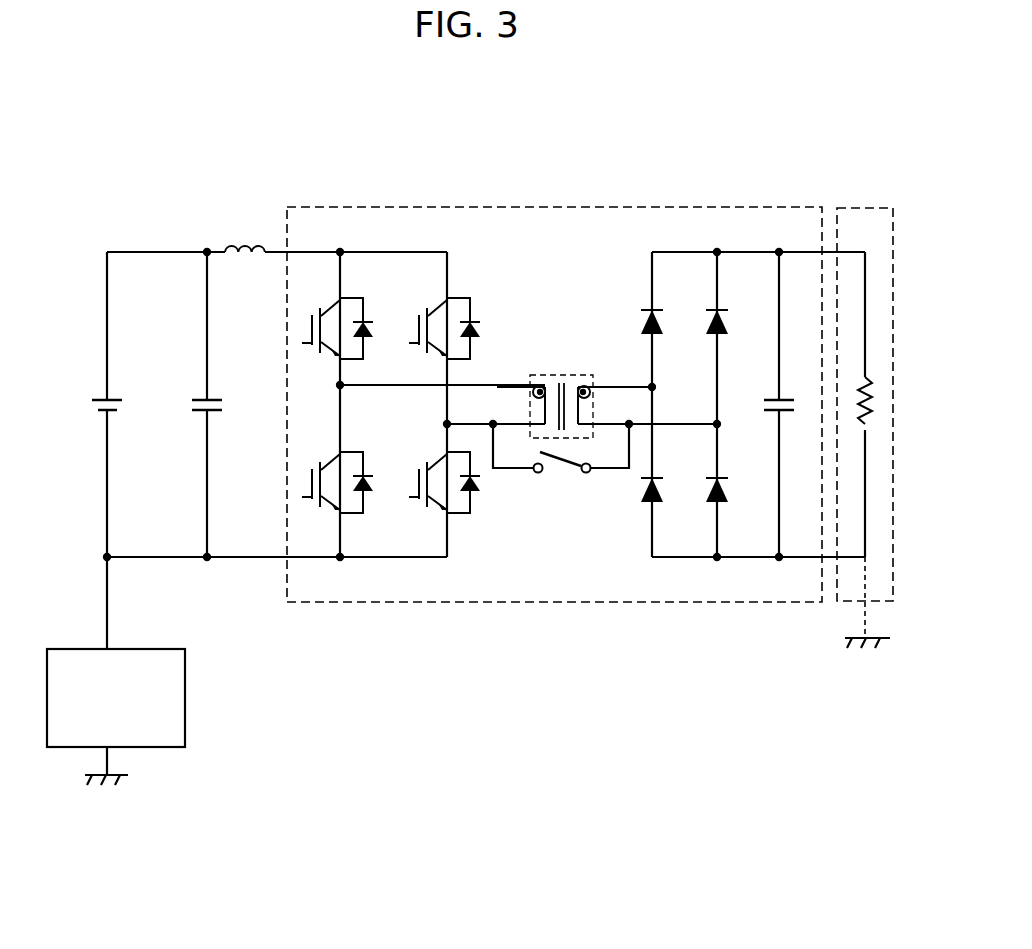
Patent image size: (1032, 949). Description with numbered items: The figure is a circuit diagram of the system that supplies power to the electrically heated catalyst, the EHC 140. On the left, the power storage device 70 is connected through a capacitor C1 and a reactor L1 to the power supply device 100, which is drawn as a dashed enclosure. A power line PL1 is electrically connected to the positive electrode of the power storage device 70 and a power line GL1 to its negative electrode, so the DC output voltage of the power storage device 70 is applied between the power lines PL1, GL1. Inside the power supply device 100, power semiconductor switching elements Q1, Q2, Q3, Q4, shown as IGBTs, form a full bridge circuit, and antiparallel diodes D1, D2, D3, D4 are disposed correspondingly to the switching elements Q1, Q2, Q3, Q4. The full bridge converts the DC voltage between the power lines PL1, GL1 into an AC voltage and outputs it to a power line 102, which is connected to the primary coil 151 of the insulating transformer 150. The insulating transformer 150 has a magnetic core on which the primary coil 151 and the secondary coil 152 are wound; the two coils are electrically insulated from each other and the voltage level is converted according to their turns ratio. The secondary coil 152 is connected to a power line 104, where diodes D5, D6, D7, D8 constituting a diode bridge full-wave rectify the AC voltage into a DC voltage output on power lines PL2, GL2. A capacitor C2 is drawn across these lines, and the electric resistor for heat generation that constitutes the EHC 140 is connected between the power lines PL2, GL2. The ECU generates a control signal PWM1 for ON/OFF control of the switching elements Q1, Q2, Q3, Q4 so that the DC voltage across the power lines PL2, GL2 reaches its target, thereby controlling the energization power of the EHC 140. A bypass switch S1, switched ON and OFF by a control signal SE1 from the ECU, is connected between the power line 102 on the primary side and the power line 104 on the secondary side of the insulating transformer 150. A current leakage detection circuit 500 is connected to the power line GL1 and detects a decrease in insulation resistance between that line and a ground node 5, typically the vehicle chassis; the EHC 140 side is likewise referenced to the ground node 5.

The power supply device 100 is at (555, 207).
The EHC 140 is at (863, 208).
The power storage device 70 is at (113, 398).
The current leakage detection circuit 500 is at (121, 649).
The ground node 5 is at (855, 638).
The power line 102 is at (503, 433).
The power line 104 is at (608, 433).
The insulating transformer 150 is at (562, 375).
The primary coil 151 is at (540, 390).
The secondary coil 152 is at (583, 390).
The power line PL1 is at (173, 250).
The power line GL1 is at (176, 559).
The power line PL2 is at (682, 250).
The power line GL2 is at (688, 560).
The reactor L1 is at (244, 245).
The capacitor C1 is at (212, 398).
The capacitor (secondary) C2 is at (783, 398).
The switching element Q1 is at (317, 312).
The switching element Q2 is at (317, 463).
The switching element Q3 is at (424, 312).
The switching element Q4 is at (424, 463).
The antiparallel diode D1 is at (365, 318).
The antiparallel diode D2 is at (369, 493).
The antiparallel diode D3 is at (472, 318).
The antiparallel diode D4 is at (476, 493).
The diode D5 is at (658, 308).
The diode D6 is at (656, 503).
The diode D7 is at (723, 308).
The diode D8 is at (722, 503).
The bypass switch S1 is at (553, 474).
The control signal SE1 is at (562, 486).
The control signal PWM1 is at (558, 608).